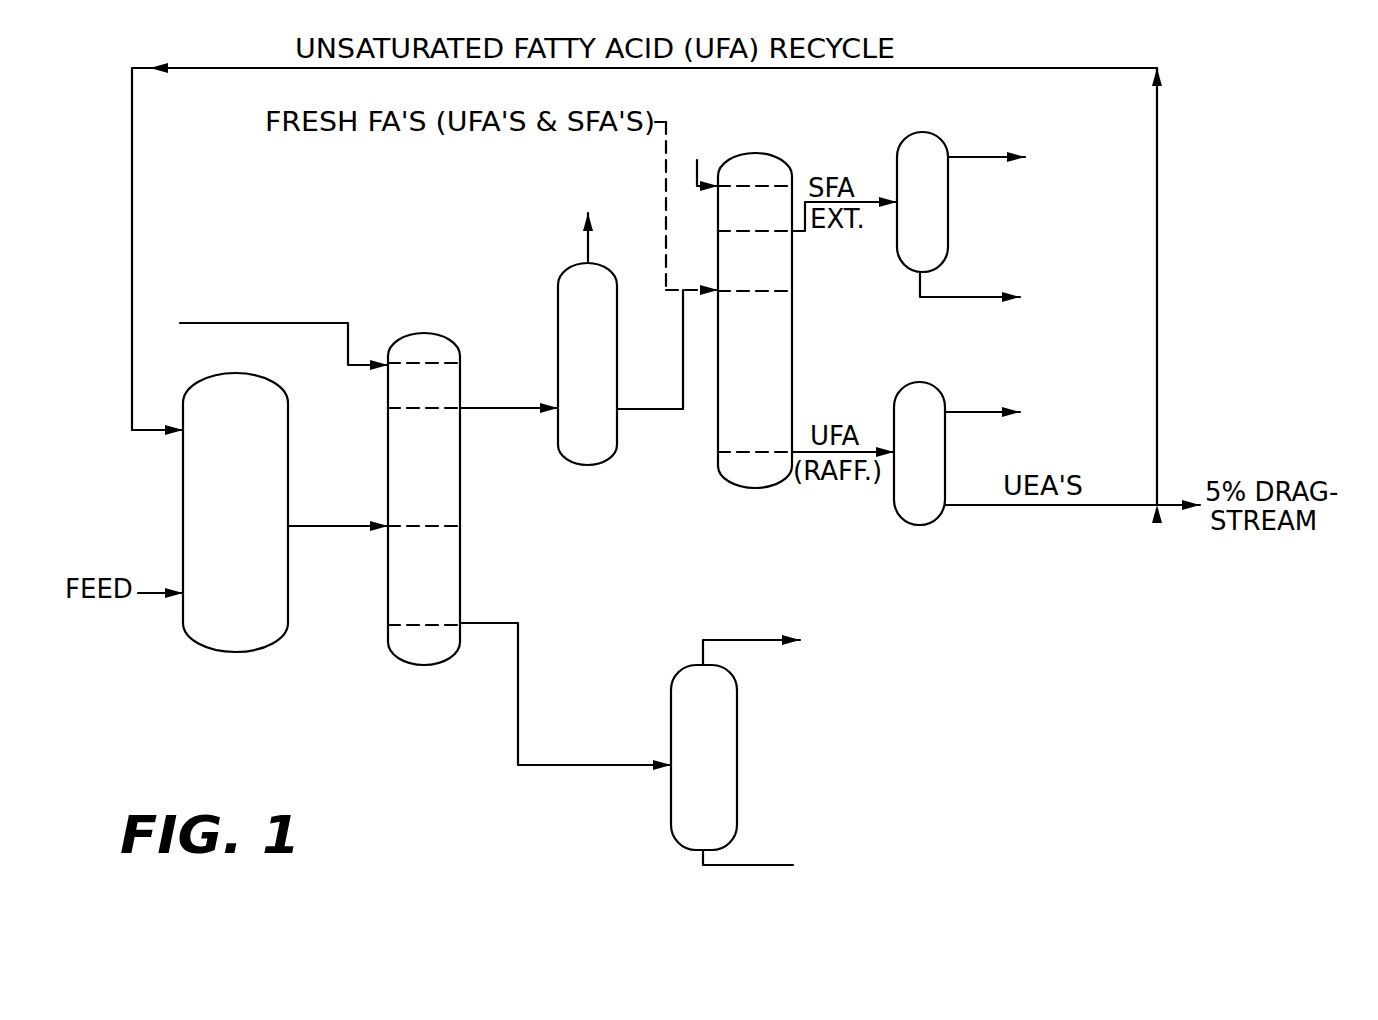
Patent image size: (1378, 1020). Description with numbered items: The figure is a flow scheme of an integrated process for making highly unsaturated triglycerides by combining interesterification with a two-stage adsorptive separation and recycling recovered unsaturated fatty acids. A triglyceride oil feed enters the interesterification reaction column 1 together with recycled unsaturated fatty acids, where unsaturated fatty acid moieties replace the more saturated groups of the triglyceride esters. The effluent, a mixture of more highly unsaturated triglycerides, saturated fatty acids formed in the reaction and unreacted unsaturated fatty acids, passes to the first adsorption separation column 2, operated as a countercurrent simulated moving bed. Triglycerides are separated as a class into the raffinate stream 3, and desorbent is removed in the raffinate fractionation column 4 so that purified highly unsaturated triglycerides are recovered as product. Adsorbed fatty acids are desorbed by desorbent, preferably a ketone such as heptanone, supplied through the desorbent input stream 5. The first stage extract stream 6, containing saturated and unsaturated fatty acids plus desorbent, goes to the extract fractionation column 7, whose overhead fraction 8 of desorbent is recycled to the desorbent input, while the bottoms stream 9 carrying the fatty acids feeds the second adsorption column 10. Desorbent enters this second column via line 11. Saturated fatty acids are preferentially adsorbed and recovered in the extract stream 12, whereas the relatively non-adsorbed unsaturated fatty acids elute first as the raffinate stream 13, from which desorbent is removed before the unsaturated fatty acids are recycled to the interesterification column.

The interesterification reaction column 1 is at (183, 618).
The first adsorption separation column 2 is at (388, 577).
The raffinate stream 3 is at (518, 750).
The raffinate fractionation column 4 is at (671, 815).
The desorbent input stream 5 is at (348, 368).
The first stage extract stream 6 is at (467, 414).
The extract fractionation column 7 is at (558, 291).
The overhead fraction 8 is at (588, 243).
The bottoms stream 9 is at (658, 412).
The second adsorption column 10 is at (792, 365).
The line 11 is at (697, 178).
The extract stream 12 is at (897, 240).
The raffinate stream 13 is at (894, 408).